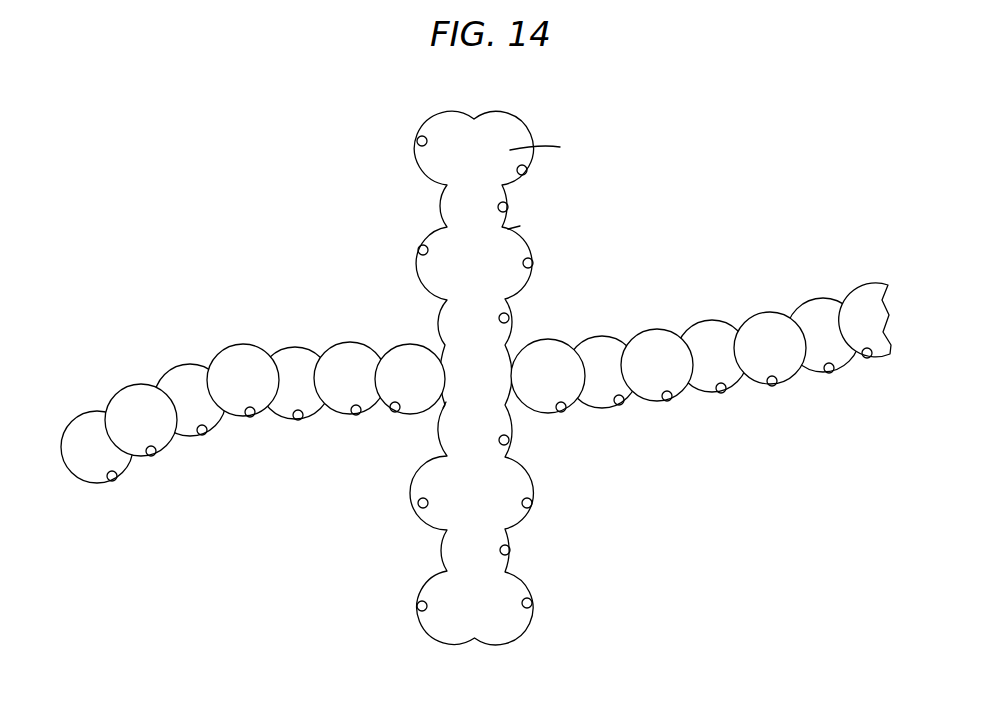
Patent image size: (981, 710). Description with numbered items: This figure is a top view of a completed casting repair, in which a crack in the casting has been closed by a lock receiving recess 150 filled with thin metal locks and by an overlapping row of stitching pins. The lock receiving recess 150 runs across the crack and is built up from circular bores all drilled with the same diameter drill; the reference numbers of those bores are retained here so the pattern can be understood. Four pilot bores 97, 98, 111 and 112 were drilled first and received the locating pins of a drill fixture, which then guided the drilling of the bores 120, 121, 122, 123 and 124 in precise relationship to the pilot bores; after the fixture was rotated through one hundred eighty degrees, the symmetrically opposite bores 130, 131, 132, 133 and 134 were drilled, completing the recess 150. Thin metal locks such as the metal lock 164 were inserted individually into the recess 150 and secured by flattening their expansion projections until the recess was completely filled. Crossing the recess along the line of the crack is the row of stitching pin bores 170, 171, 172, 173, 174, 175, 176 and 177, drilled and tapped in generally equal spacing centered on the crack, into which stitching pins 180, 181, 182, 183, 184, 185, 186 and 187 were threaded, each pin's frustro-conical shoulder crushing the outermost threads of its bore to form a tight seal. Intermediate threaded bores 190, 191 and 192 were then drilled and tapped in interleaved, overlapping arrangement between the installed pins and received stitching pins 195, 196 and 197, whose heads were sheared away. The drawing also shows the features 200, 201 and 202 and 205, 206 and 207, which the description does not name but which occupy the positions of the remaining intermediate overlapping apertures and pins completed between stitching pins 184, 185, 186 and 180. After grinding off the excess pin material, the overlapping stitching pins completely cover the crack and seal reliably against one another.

The pilot bore 97 is at (509, 207).
The pilot bore 98 is at (510, 550).
The pilot bore 111 is at (509, 445).
The pilot bore 112 is at (509, 316).
The bore 120 is at (417, 609).
The bore 121 is at (424, 508).
The bore 122 is at (443, 408).
The bore 123 is at (418, 250).
The bore 124 is at (417, 141).
The bore 130 is at (528, 169).
The bore 131 is at (533, 263).
The bore 132 is at (555, 438).
The bore 133 is at (532, 503).
The bore 134 is at (532, 603).
The lock receiving recess 150 is at (520, 226).
The metal lock 164 is at (560, 147).
The stitching pin bore 170 is at (868, 358).
The stitching pin bore 171 is at (774, 386).
The stitching pin bore 172 is at (670, 401).
The stitching pin bore 173 is at (564, 412).
The stitching pin bore 174 is at (394, 412).
The stitching pin bore 175 is at (299, 420).
The stitching pin bore 176 is at (205, 434).
The stitching pin bore 177 is at (114, 481).
The stitching pin 180 is at (553, 358).
The stitching pin 181 is at (405, 358).
The stitching pin 182 is at (298, 358).
The stitching pin 183 is at (182, 370).
The stitching pin 184 is at (860, 287).
The stitching pin 185 is at (762, 318).
The stitching pin 186 is at (655, 340).
The stitching pin 187 is at (93, 425).
The intermediate threaded bore 190 is at (356, 415).
The intermediate threaded bore 191 is at (251, 417).
The intermediate threaded bore 192 is at (155, 455).
The stitching pin 195 is at (343, 360).
The stitching pin 196 is at (242, 352).
The stitching pin 197 is at (136, 405).
The seal 200 is at (622, 405).
The seal 201 is at (724, 393).
The seal 202 is at (830, 373).
The cell 205 is at (602, 352).
The cell 206 is at (705, 338).
The cell 207 is at (810, 303).